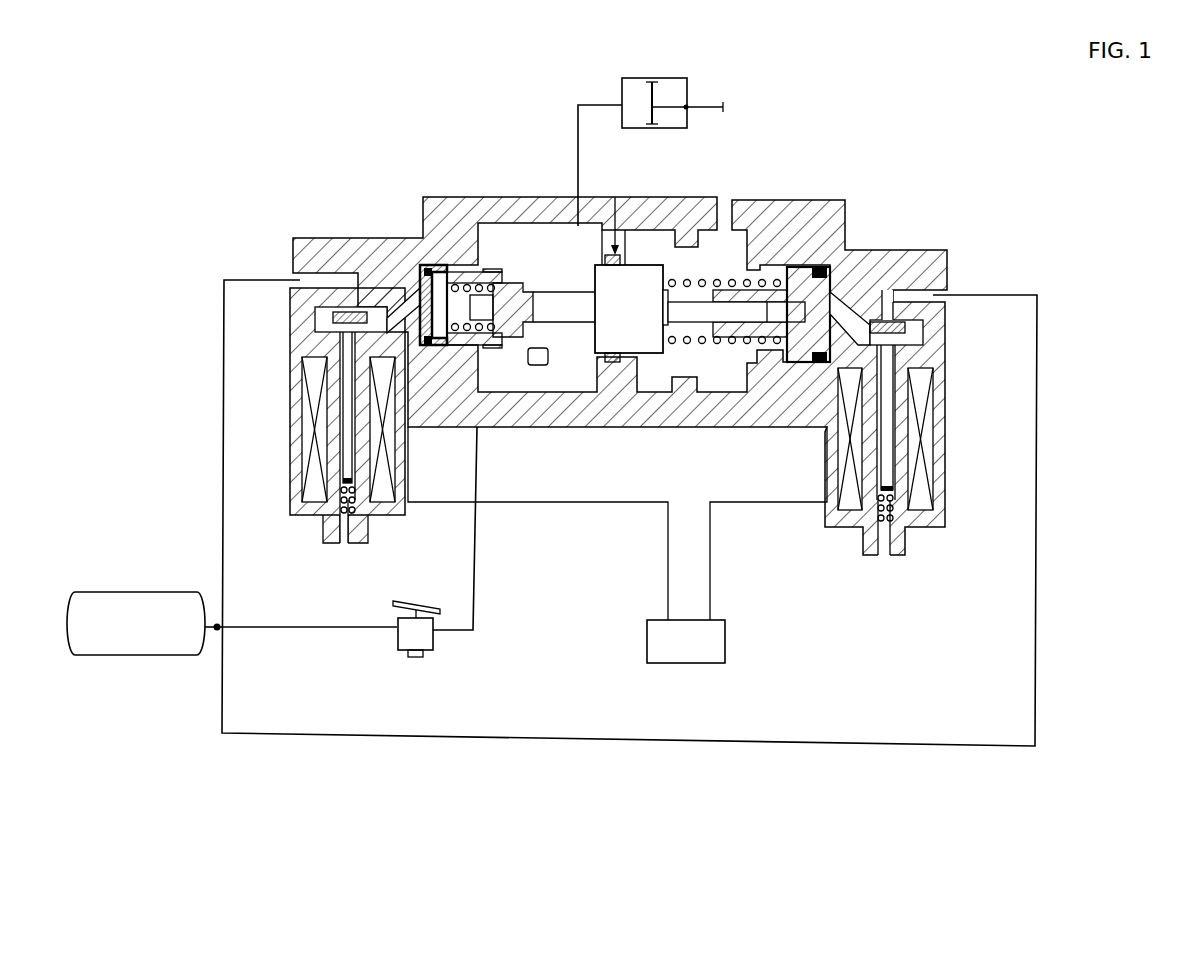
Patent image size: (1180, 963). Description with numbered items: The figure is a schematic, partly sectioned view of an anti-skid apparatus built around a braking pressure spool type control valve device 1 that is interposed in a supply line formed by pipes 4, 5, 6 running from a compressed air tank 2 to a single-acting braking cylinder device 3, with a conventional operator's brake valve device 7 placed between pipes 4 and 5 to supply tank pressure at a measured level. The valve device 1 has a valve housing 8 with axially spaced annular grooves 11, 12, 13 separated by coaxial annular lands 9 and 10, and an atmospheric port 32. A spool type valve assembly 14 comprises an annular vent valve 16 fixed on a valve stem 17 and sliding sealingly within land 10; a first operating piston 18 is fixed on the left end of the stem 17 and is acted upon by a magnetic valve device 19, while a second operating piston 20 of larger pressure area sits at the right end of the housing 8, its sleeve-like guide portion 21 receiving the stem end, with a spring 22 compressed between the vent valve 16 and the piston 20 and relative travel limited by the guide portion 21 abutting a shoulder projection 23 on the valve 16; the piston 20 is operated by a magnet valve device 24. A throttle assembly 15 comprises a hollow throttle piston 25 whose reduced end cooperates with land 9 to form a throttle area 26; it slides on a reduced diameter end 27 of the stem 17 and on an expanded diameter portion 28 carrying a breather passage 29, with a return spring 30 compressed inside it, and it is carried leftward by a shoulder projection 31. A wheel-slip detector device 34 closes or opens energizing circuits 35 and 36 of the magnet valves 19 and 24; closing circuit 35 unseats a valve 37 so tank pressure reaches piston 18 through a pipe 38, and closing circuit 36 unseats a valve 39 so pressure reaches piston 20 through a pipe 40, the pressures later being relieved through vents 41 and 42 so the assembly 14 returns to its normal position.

The braking pressure spool type control valve device 1 is at (798, 437).
The compressed air tank 2 is at (93, 642).
The single-acting braking cylinder device 3 is at (668, 78).
The pipe 4 is at (272, 630).
The pipe 5 is at (474, 592).
The pipe 6 is at (575, 116).
The operator's brake valve device 7 is at (418, 637).
The valve housing 8 is at (738, 410).
The annular land 9 is at (522, 240).
The annular land 10 is at (630, 262).
The annular groove 11 is at (525, 232).
The annular groove 12 is at (548, 255).
The annular groove 13 is at (648, 242).
The spool type valve assembly 14 is at (638, 362).
The throttle assembly 15 is at (466, 270).
The annular vent valve 16 is at (620, 256).
The valve stem 17 is at (586, 292).
The first operating piston 18 is at (418, 277).
The magnetic valve device 19 is at (314, 436).
The second operating piston 20 is at (848, 250).
The sleeve-like guide portion 21 is at (770, 262).
The spring 22 is at (812, 248).
The shoulder projection 23 is at (695, 342).
The magnet valve device 24 is at (928, 468).
The hollow throttle piston 25 is at (512, 350).
The throttle area 26 is at (533, 362).
The reduced diameter end 27 is at (477, 348).
The expanded diameter portion 28 is at (535, 343).
The breather passage 29 is at (463, 268).
The return spring 30 is at (437, 270).
The shoulder projection 31 is at (493, 350).
The atmospheric port 32 is at (725, 198).
The wheel-slip detector device 34 is at (702, 653).
The energizing circuit 35 is at (668, 593).
The energizing circuit 36 is at (710, 593).
The valve 37 is at (330, 313).
The pipe 38 is at (223, 395).
The valve 39 is at (907, 323).
The pipe 40 is at (1036, 412).
The vent 41 is at (350, 544).
The vent 42 is at (884, 556).